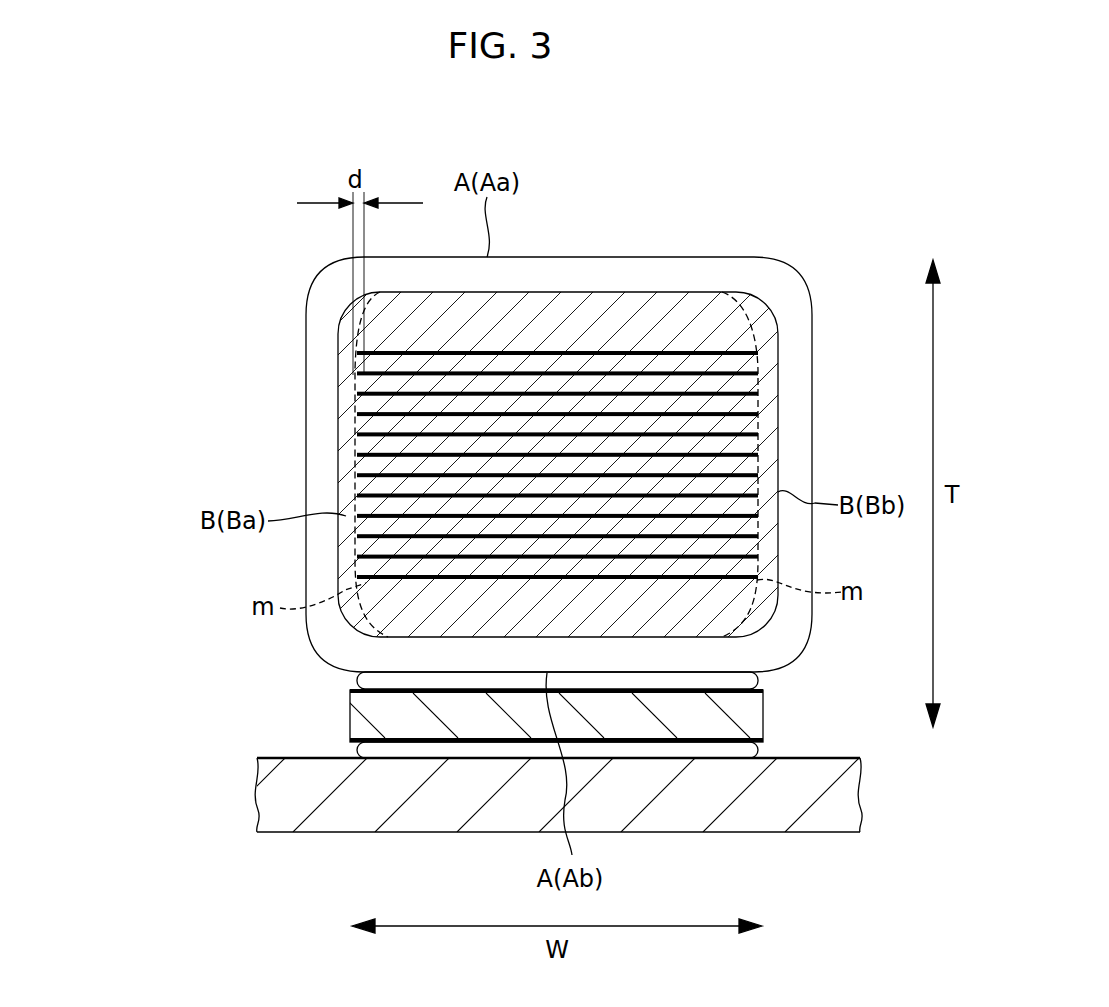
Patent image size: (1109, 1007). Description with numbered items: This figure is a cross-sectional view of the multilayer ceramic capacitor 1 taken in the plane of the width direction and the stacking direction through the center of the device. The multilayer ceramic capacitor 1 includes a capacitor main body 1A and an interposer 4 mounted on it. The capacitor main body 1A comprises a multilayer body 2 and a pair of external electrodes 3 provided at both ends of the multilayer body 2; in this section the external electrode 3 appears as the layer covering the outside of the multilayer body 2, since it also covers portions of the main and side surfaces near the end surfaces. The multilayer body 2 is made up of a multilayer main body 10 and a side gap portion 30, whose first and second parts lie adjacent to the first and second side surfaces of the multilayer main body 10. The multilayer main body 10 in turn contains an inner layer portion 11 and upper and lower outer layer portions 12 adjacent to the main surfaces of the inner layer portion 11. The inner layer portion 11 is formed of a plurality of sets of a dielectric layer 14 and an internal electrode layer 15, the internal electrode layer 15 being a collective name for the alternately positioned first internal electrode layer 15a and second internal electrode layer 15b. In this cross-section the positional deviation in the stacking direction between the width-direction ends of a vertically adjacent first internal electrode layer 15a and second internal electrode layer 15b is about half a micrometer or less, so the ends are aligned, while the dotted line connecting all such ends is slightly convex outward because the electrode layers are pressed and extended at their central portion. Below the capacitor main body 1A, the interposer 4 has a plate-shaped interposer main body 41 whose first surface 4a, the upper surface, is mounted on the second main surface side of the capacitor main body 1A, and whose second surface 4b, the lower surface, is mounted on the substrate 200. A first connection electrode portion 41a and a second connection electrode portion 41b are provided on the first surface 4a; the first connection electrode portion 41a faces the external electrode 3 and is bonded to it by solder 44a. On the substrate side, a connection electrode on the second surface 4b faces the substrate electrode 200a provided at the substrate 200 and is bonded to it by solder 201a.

The multilayer ceramic capacitor 1 is at (787, 72).
The capacitor main body 1A is at (572, 124).
The multilayer body 2 is at (740, 174).
The external electrode 3 is at (568, 270).
The interposer 4 is at (765, 707).
The multilayer main body 10 is at (613, 292).
The side gap portion 30 is at (272, 481).
The inner layer portion 11 is at (357, 577).
The outer layer portion 12 is at (385, 637).
The dielectric layer 14 is at (366, 443).
The internal electrode layer 15 is at (223, 362).
The first internal electrode layer 15a is at (408, 398).
The second internal electrode layer 15b is at (400, 376).
The interposer main body 41 is at (750, 718).
The first connection electrode portion 41a is at (377, 694).
The second connection electrode portion 41b is at (380, 740).
The solder 44a is at (360, 681).
The first surface 4a is at (667, 683).
The second surface 4b is at (640, 741).
The substrate 200 is at (827, 807).
The substrate electrode 200a is at (397, 762).
The solder 201a is at (473, 750).